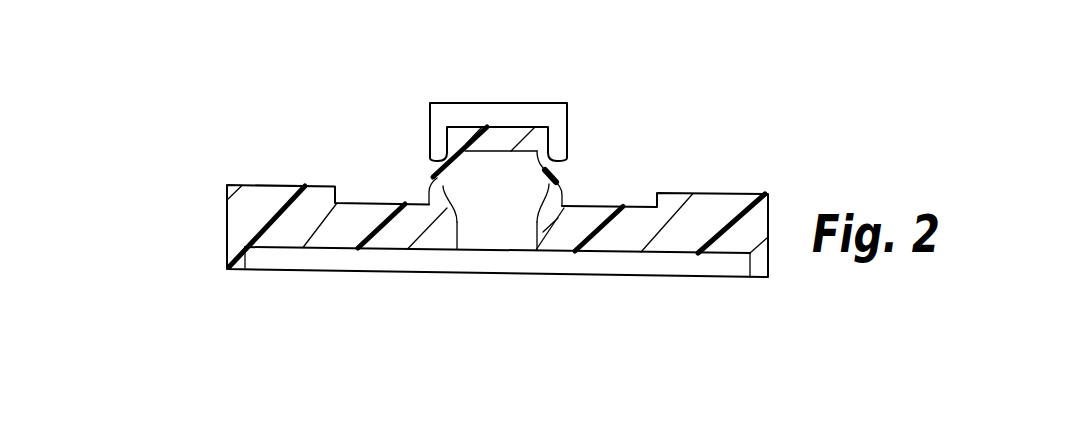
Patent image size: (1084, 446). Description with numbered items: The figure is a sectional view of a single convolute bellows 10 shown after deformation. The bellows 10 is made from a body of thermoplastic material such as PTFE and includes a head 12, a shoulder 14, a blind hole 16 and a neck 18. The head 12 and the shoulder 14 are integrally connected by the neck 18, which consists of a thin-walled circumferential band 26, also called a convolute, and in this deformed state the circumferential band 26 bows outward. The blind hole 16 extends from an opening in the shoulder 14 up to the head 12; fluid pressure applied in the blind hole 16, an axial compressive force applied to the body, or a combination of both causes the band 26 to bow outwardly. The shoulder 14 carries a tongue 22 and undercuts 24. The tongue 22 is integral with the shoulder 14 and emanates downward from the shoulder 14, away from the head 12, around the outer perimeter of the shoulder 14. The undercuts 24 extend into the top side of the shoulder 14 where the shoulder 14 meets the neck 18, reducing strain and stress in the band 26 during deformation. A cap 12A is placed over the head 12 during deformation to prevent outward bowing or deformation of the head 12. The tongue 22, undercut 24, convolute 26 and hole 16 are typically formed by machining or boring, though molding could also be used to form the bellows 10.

The single convolute bellows 10 is at (196, 184).
The head 12 is at (478, 148).
The cap 12A is at (524, 104).
The shoulder 14 is at (774, 193).
The blind hole 16 is at (495, 234).
The neck 18 is at (572, 169).
The tongue 22 is at (757, 264).
The undercut 24 is at (427, 203).
The thin-walled circumferential band 26 is at (428, 190).